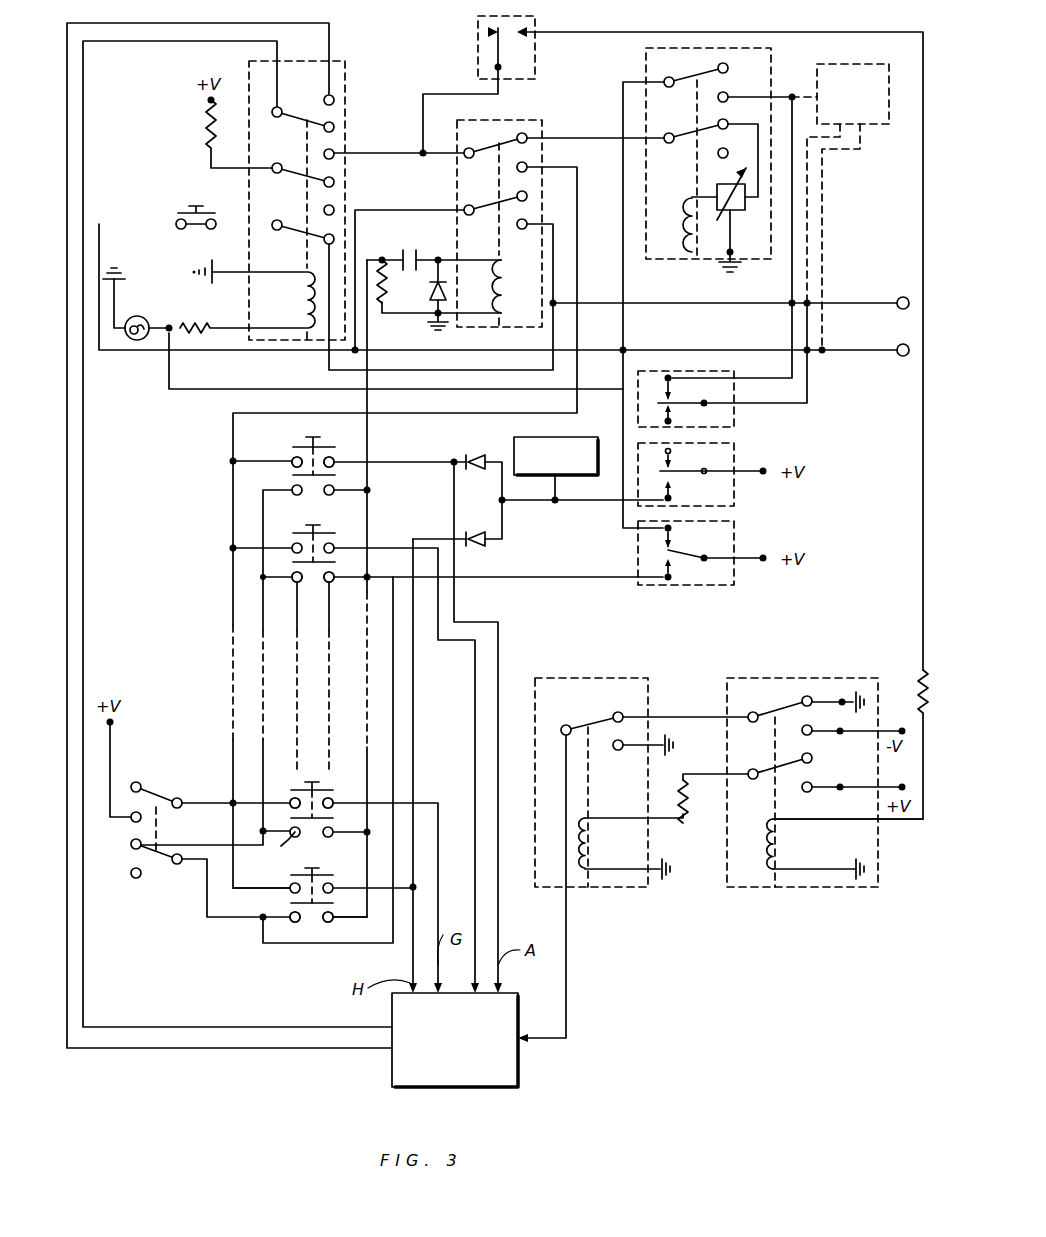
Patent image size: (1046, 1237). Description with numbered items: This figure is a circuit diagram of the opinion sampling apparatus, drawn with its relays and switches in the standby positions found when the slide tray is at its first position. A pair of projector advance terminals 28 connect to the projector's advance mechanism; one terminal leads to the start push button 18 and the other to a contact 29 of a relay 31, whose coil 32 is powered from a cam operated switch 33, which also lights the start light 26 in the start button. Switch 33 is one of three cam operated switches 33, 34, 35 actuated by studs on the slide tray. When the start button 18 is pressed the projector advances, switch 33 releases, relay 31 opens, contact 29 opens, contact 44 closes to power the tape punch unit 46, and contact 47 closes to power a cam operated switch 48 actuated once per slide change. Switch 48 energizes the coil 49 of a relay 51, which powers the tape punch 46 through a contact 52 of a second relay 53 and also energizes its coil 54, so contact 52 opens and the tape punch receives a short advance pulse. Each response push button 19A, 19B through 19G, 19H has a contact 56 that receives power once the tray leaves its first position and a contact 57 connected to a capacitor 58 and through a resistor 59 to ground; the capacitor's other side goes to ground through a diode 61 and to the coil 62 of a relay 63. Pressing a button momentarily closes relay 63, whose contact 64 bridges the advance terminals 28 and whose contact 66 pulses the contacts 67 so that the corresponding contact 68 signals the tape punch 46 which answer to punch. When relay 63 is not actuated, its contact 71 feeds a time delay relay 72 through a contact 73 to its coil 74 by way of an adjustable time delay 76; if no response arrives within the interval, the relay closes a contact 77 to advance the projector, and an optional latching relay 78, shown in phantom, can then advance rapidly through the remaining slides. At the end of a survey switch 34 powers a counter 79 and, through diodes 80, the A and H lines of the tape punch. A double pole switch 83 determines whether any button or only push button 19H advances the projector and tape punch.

The start push button 18 is at (185, 210).
The response push button 19A is at (328, 443).
The response push button 19B is at (320, 530).
The response push button 19G is at (320, 784).
The response push button 19H is at (292, 903).
The start light 26 is at (140, 316).
The projector advance terminals 28 is at (903, 296).
The contact 29 is at (336, 241).
The relay 31 is at (340, 62).
The coil 32 is at (306, 270).
The cam operated switch 33 is at (734, 585).
The cam operated switch 34 is at (734, 506).
The cam operated switch 35 is at (734, 427).
The contact 44 is at (334, 100).
The tape punch unit 46 is at (455, 1040).
The contact 47 is at (336, 150).
The cam operated switch 48 is at (536, 24).
The coil 49 is at (776, 872).
The relay 51 is at (853, 678).
The contact 52 is at (623, 713).
The second relay 53 is at (580, 678).
The coil 54 is at (592, 872).
The contact 56 is at (297, 598).
The contact 57 is at (329, 598).
The capacitor 58 is at (405, 250).
The resistor 59 is at (382, 306).
The diode 61 is at (430, 290).
The coil 62 is at (508, 286).
The relay 63 is at (543, 122).
The contact 64 is at (527, 222).
The contact 66 is at (528, 165).
The contact 67 is at (292, 458).
The contact 68 is at (334, 458).
The contact 71 is at (524, 131).
The time delay relay 72 is at (760, 50).
The contact 73 is at (729, 121).
The coil 74 is at (692, 254).
The adjustable time delay 76 is at (717, 190).
The contact 77 is at (729, 93).
The latching relay 78 is at (872, 126).
The counter 79 is at (585, 437).
The diodes 80 is at (466, 457).
The double pole switch 83 is at (148, 792).